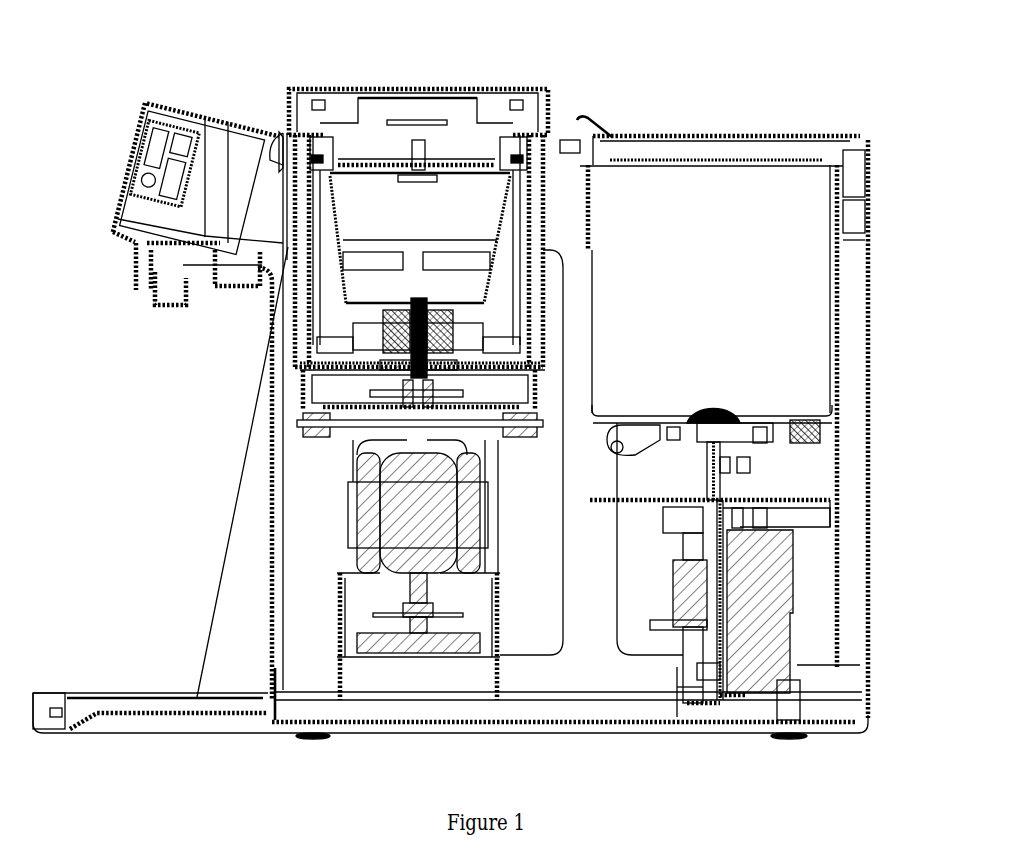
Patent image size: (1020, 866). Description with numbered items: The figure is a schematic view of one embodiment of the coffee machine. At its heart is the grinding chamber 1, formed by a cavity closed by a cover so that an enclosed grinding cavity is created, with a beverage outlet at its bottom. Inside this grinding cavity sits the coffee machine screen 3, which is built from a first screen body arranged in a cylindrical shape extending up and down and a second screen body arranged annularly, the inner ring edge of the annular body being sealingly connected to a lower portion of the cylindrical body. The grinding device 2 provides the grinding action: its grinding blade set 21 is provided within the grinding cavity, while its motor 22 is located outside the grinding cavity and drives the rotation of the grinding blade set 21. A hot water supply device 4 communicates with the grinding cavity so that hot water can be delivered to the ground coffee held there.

The grinding chamber 1 is at (459, 85).
The grinding device 2 is at (320, 499).
The grinding blade set 21 is at (382, 330).
The motor 22 is at (410, 524).
The coffee machine screen 3 is at (500, 245).
The hot water supply device 4 is at (737, 423).